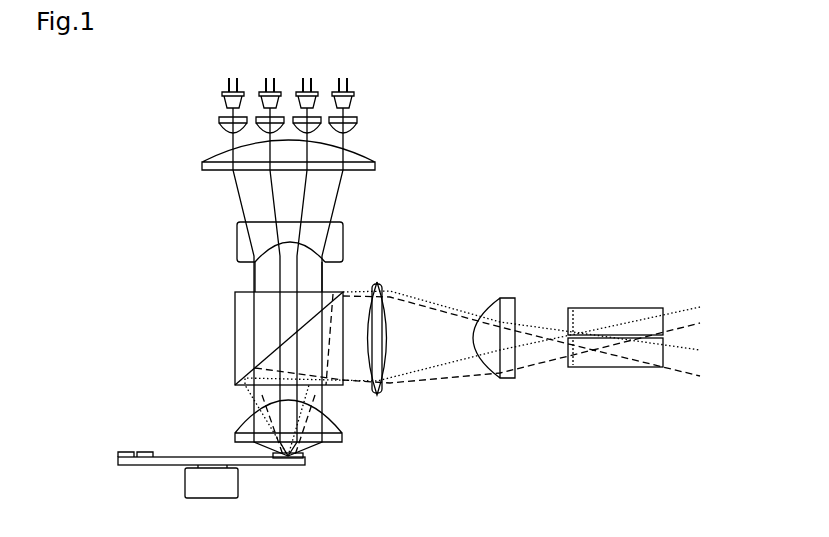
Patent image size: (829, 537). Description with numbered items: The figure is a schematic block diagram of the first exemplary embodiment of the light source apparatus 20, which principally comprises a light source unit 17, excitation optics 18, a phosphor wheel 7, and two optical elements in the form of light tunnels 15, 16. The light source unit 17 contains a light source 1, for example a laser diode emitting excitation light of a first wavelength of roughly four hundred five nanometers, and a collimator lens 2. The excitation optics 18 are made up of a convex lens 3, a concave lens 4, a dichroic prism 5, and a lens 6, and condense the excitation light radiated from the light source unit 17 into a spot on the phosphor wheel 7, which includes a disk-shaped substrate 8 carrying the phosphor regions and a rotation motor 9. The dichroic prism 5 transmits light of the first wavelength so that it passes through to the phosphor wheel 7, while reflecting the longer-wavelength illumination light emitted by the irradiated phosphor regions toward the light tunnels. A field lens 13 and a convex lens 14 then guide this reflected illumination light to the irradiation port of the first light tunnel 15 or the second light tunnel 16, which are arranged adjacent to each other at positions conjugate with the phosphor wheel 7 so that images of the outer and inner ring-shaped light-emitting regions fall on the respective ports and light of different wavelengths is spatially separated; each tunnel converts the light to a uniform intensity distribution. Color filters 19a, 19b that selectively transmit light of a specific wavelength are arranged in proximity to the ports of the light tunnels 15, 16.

The light source 1 is at (348, 98).
The collimator lens 2 is at (357, 121).
The convex lens 3 is at (370, 165).
The concave lens 4 is at (338, 240).
The dichroic prism 5 is at (235, 330).
The lens 6 is at (243, 422).
The phosphor wheel 7 is at (118, 448).
The disk-shaped substrate 8 is at (305, 458).
The rotation motor 9 is at (238, 486).
The field lens 13 is at (385, 288).
The convex lens 14 is at (505, 302).
The first light tunnel 15 is at (607, 313).
The second light tunnel 16 is at (623, 363).
The light source unit 17 is at (452, 82).
The excitation optics 18 is at (145, 130).
The color filter 19a is at (573, 320).
The color filter 19b is at (573, 352).
The light source apparatus 20 is at (540, 140).